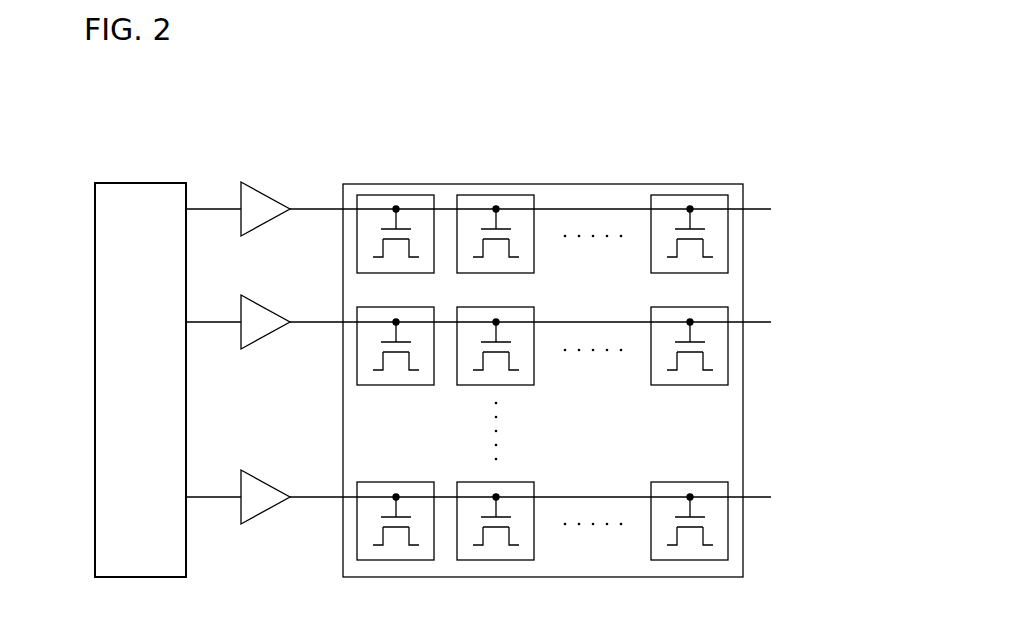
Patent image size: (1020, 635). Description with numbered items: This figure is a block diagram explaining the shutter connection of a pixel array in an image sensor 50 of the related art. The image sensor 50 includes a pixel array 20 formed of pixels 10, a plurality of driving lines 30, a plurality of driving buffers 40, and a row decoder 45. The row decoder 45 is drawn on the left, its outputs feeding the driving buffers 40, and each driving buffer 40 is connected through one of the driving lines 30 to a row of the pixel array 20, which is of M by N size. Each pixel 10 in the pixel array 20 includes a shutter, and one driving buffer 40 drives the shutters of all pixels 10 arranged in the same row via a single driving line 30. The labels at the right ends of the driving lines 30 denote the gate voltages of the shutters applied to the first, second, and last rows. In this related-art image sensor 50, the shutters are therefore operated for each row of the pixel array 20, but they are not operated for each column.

The image sensor 50 is at (648, 124).
The row decoder 45 is at (141, 183).
The driving buffers 40 is at (241, 196).
The driving lines 30 is at (320, 207).
The pixel array 20 is at (682, 184).
The pixels 10 is at (395, 195).